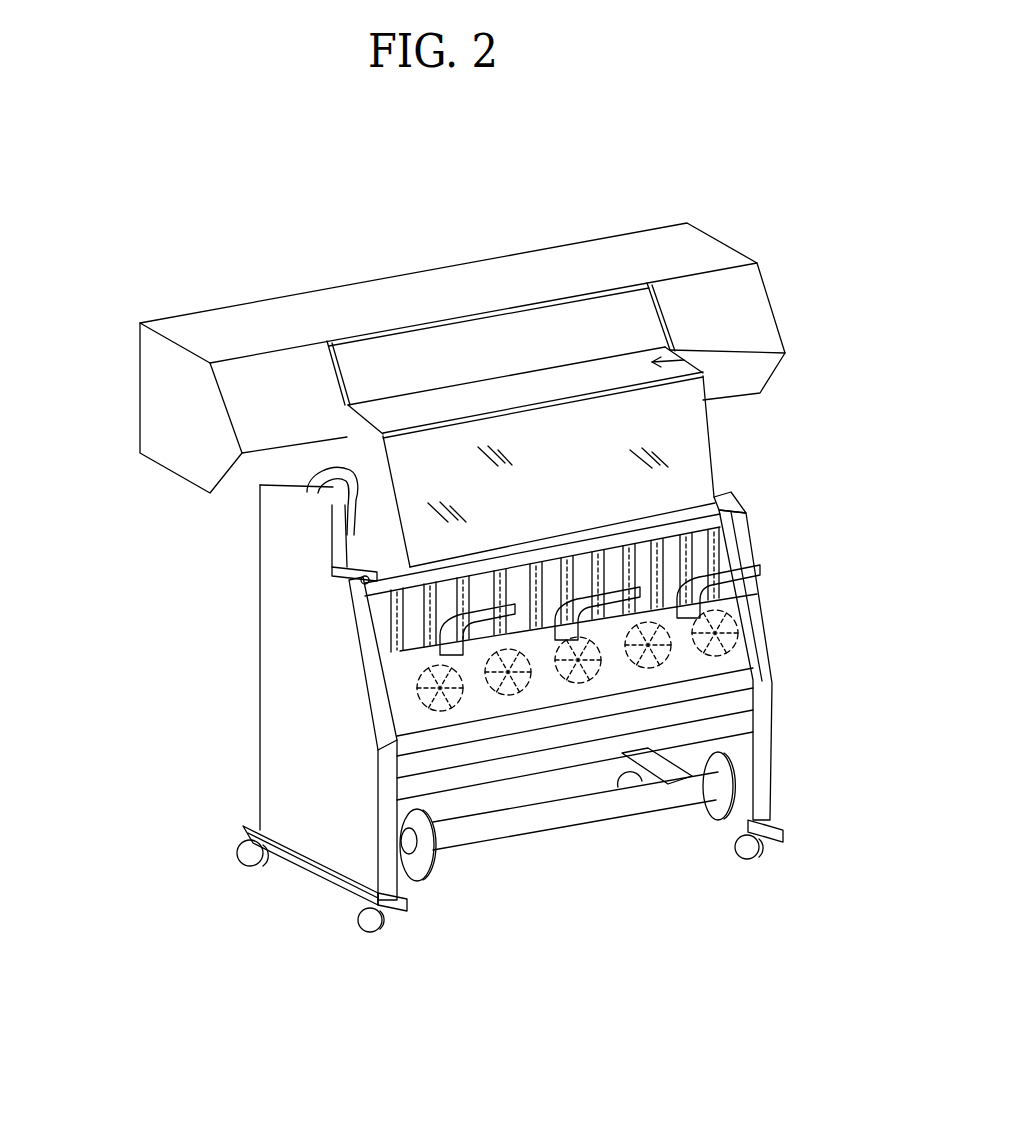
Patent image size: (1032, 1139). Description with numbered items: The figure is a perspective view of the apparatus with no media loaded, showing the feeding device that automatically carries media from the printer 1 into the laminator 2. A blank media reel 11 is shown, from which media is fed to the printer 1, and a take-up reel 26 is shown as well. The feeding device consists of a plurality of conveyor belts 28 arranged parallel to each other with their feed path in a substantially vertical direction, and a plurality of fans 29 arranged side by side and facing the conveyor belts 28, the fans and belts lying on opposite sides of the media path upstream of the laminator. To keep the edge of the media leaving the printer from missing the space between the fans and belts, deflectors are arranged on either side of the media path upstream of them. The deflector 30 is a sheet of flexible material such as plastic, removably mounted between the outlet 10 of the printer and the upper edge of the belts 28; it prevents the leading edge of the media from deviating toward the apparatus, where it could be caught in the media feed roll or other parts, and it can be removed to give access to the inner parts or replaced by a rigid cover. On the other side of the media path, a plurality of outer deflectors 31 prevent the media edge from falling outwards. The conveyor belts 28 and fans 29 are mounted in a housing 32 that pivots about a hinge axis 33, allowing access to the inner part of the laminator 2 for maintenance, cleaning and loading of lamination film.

The printer 1 is at (380, 308).
The laminator 2 is at (292, 775).
The outlet 10 is at (700, 362).
The blank media reel 11 is at (370, 487).
The take-up reel 26 is at (670, 797).
The conveyor belts 28 is at (565, 581).
The fans 29 is at (515, 689).
The deflector 30 is at (668, 431).
The outer deflectors 31 is at (737, 570).
The housing 32 is at (378, 617).
The hinge axis 33 is at (362, 578).